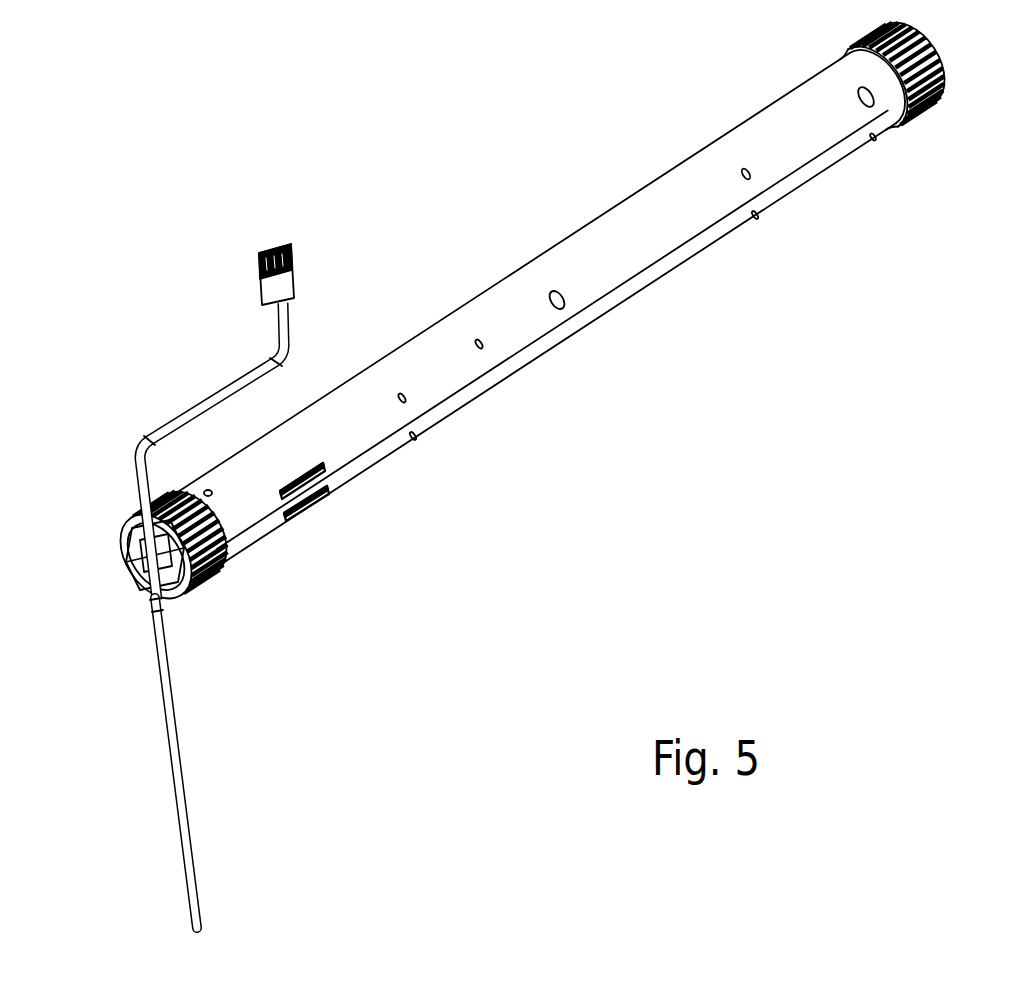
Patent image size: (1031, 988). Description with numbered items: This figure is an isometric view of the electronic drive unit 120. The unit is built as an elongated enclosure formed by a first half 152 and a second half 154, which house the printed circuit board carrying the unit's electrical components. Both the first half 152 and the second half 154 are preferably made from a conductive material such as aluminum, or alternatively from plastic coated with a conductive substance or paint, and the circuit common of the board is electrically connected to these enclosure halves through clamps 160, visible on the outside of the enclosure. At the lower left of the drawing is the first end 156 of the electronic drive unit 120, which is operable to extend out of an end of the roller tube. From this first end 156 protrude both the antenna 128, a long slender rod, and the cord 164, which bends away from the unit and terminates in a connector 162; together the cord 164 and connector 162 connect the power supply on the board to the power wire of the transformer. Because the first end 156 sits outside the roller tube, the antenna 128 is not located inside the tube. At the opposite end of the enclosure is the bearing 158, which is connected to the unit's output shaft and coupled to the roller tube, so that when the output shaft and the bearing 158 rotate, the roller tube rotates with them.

The electronic drive unit 120 is at (327, 93).
The antenna 128 is at (178, 750).
The first half 152 is at (635, 232).
The second half 154 is at (673, 266).
The first end 156 is at (220, 588).
The bearing 158 is at (930, 107).
The clamps 160 is at (330, 458).
The connector 162 is at (258, 288).
The cord 164 is at (192, 405).